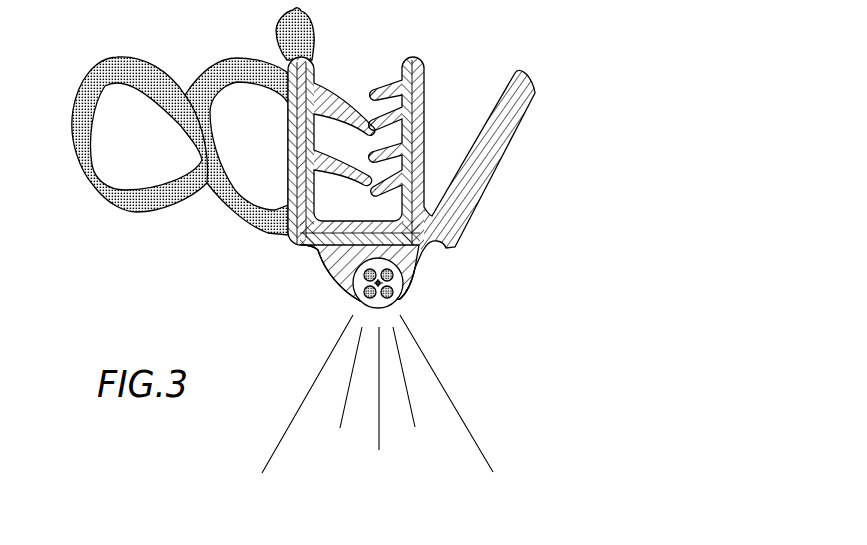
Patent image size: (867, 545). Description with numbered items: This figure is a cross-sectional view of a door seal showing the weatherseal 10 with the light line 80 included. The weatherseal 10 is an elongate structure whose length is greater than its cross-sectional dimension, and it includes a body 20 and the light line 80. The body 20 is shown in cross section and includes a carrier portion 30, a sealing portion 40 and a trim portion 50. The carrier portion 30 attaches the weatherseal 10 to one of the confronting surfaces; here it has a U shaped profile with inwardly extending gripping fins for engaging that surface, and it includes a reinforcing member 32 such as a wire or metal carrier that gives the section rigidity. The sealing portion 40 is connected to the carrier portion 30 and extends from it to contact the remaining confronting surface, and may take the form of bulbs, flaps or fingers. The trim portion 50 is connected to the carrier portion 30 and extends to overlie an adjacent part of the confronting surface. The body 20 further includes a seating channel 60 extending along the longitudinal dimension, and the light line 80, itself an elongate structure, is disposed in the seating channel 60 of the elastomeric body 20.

The weatherseal 10 is at (250, 259).
The body 20 is at (426, 91).
The carrier portion 30 is at (313, 117).
The reinforcing member 32 is at (416, 149).
The sealing portion 40 is at (96, 191).
The trim portion 50 is at (502, 167).
The seating channel 60 is at (344, 286).
The light line 80 is at (401, 289).